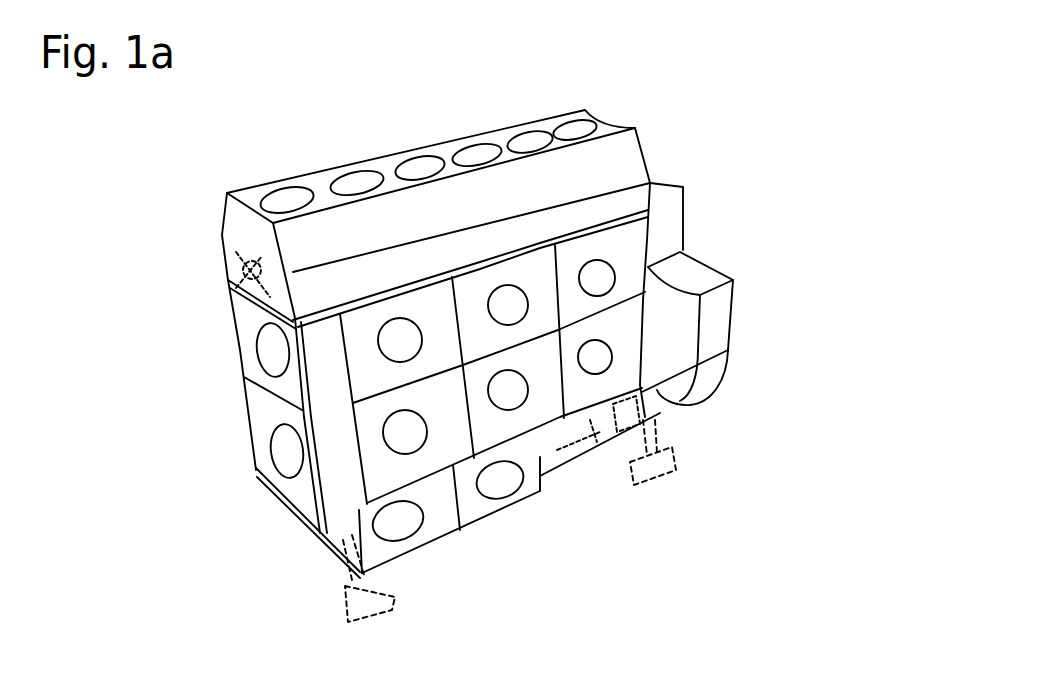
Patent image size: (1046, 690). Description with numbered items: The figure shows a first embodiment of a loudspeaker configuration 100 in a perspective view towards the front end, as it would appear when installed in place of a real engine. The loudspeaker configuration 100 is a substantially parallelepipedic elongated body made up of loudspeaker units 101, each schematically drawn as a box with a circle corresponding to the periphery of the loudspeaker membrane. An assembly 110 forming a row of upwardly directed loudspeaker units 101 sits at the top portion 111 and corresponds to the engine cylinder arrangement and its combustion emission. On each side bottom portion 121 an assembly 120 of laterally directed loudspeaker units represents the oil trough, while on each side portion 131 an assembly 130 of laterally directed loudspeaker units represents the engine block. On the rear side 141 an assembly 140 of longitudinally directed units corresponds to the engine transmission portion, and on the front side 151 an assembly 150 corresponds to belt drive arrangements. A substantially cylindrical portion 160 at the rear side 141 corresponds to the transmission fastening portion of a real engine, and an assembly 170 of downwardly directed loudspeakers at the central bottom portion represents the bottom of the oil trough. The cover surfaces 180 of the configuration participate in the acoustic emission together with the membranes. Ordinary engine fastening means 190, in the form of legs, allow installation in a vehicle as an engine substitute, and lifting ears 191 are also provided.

The loudspeaker configuration 100 is at (748, 88).
The loudspeaker units 101 is at (465, 150).
The assembly of upwardly directed loudspeaker units 110 is at (386, 148).
The top portion 111 is at (211, 261).
The assembly of laterally directed loudspeaker units 120 is at (467, 530).
The side bottom portion 121 is at (384, 553).
The assembly of laterally directed loudspeaker units 130 is at (538, 410).
The side portion 131 is at (577, 395).
The assembly of longitudinally directed loudspeaker units 140 is at (672, 232).
The rear side 141 is at (698, 262).
The assembly of longitudinally directed loudspeaker units 150 is at (297, 492).
The front side 151 is at (258, 405).
The cylindrical portion 160 is at (714, 379).
The assembly of downwardly directed loudspeakers 170 is at (626, 482).
The cover surfaces 180 is at (309, 183).
The engine fastening means 190 is at (324, 612).
The lifting ears 191 is at (198, 288).